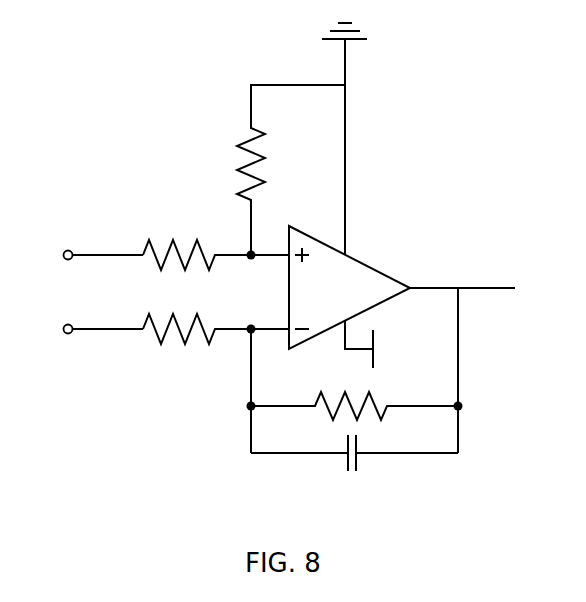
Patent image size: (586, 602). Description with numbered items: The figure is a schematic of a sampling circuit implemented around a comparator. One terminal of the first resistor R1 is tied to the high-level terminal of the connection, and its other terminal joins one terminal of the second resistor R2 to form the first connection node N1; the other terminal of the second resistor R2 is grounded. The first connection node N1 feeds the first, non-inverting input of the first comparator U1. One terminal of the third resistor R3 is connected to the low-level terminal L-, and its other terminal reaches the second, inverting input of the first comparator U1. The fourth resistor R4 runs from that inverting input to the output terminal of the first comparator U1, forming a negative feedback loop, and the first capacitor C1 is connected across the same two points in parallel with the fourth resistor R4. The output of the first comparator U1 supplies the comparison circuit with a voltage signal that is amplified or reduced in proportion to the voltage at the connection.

The first resistor R1 is at (197, 243).
The second resistor R2 is at (291, 170).
The third resistor R3 is at (197, 317).
The fourth resistor R4 is at (355, 395).
The first capacitor C1 is at (354, 453).
The first comparator U1 is at (349, 297).
The first connection node N1 is at (262, 272).
The low-level terminal L- is at (98, 317).